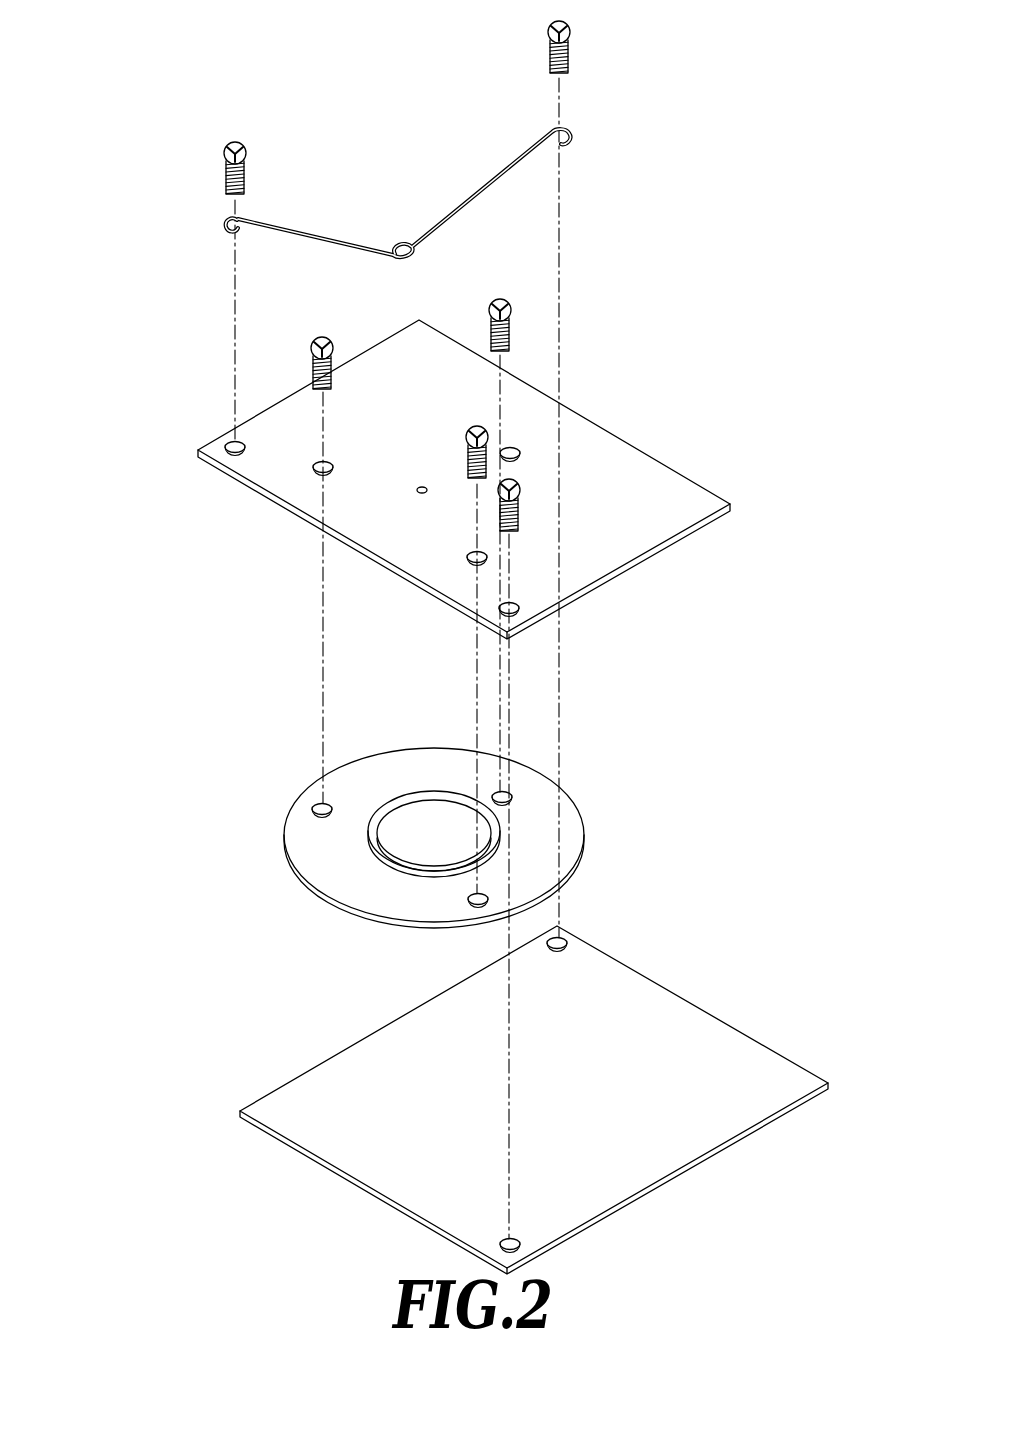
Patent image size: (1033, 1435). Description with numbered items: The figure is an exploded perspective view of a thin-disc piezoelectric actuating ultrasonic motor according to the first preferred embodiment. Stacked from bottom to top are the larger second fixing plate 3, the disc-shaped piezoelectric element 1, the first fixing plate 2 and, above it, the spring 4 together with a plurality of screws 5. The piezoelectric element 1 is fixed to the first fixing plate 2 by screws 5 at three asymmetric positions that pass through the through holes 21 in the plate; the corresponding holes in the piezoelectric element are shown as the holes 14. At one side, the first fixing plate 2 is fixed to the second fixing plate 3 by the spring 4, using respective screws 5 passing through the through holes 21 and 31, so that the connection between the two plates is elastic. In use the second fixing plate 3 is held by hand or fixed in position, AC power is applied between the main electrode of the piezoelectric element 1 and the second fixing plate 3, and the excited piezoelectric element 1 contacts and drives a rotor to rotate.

The piezoelectric element 1 is at (347, 892).
The mounting holes of base disk 14 is at (318, 807).
The first fixing plate 2 is at (307, 495).
The through hole 21 is at (232, 445).
The second fixing plate 3 is at (325, 1132).
The through hole 31 is at (562, 940).
The spring 4 is at (475, 192).
The screws 5 is at (226, 173).